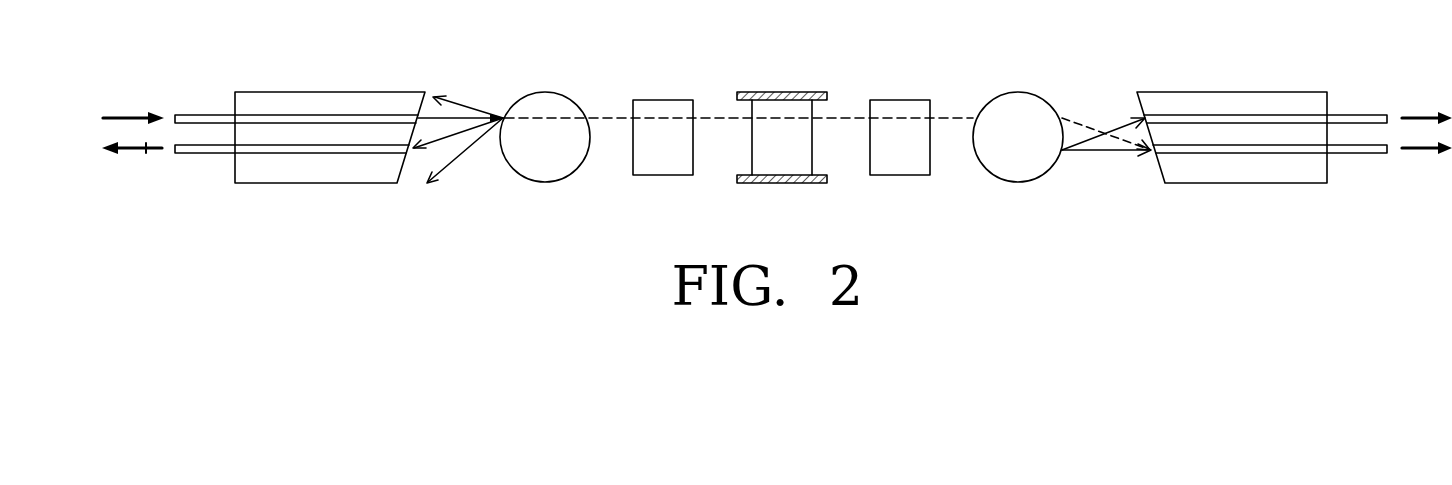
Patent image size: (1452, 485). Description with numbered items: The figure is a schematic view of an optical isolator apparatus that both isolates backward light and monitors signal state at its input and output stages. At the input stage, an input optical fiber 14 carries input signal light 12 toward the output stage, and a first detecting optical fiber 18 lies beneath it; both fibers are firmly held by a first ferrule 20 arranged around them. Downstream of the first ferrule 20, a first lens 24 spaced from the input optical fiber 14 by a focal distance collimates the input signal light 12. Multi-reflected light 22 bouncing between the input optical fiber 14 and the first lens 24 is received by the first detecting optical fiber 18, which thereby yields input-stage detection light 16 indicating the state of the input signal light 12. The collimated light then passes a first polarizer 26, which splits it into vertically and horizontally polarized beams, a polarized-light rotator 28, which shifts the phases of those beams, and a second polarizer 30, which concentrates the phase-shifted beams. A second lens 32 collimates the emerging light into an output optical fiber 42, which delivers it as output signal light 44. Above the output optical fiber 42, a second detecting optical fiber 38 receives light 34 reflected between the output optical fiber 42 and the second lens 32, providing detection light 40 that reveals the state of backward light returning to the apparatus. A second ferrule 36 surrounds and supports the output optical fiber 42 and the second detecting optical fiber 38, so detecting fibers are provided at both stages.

The input signal light 12 is at (121, 115).
The input optical fiber 14 is at (205, 114).
The input-stage detection light 16 is at (121, 151).
The first detecting optical fiber 18 is at (204, 154).
The first ferrule 20 is at (322, 92).
The multi-reflected light 22 is at (462, 154).
The first lens 24 is at (545, 92).
The first polarizer 26 is at (660, 99).
The polarized-light rotator 28 is at (778, 92).
The second polarizer 30 is at (900, 99).
The second lens 32 is at (1018, 92).
The light reflected between the output optical fiber and the second lens 34 is at (1103, 152).
The second ferrule 36 is at (1239, 92).
The second detecting optical fiber 38 is at (1357, 115).
The detection light 40 is at (1423, 117).
The output optical fiber 42 is at (1357, 153).
The output signal light 44 is at (1423, 150).